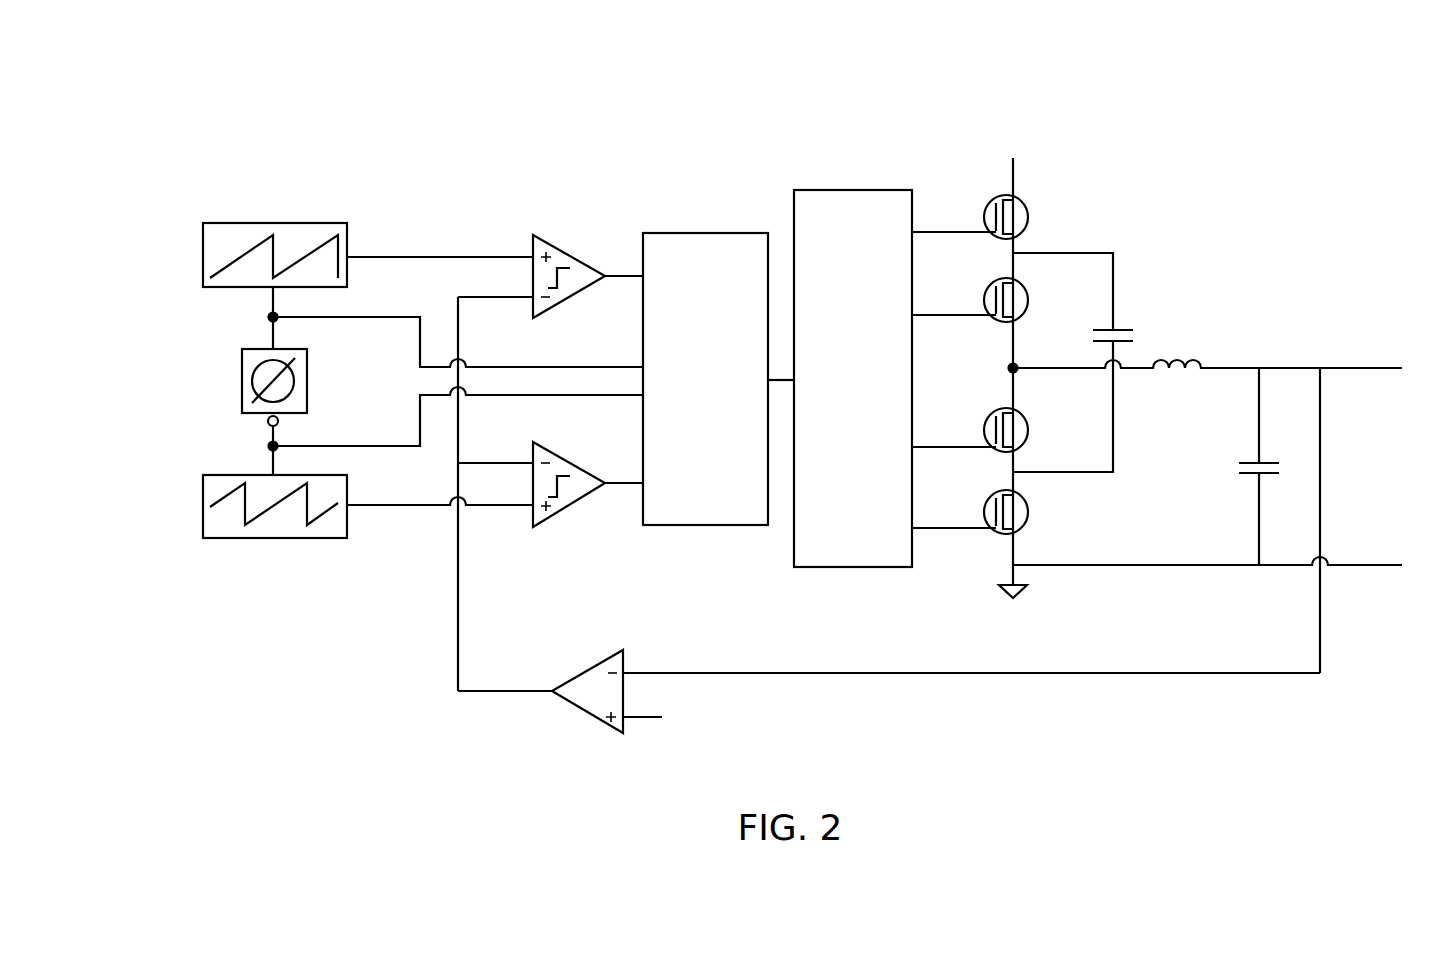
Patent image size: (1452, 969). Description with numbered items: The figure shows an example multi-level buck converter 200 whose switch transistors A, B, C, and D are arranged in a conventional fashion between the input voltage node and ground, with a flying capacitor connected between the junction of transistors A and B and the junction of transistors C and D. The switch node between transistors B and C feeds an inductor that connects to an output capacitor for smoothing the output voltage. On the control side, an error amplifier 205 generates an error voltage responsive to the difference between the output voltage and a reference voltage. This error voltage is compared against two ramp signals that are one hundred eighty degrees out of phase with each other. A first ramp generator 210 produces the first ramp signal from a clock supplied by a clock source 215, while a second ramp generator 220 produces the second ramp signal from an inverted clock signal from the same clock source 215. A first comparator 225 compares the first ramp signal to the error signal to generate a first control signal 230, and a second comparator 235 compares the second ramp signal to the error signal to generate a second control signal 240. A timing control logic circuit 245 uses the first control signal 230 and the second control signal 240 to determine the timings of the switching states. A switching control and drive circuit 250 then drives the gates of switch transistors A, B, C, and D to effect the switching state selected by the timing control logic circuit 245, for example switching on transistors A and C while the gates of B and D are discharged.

The multi-level buck converter 200 is at (765, 94).
The error amplifier 205 is at (583, 712).
The first ramp generator 210 is at (203, 262).
The clock source 215 is at (242, 385).
The second ramp generator 220 is at (203, 508).
The first comparator 225 is at (570, 250).
The first control signal 230 is at (612, 278).
The second comparator 235 is at (548, 520).
The second control signal 240 is at (614, 485).
The timing control logic circuit 245 is at (705, 525).
The switching control and drive circuit 250 is at (851, 567).